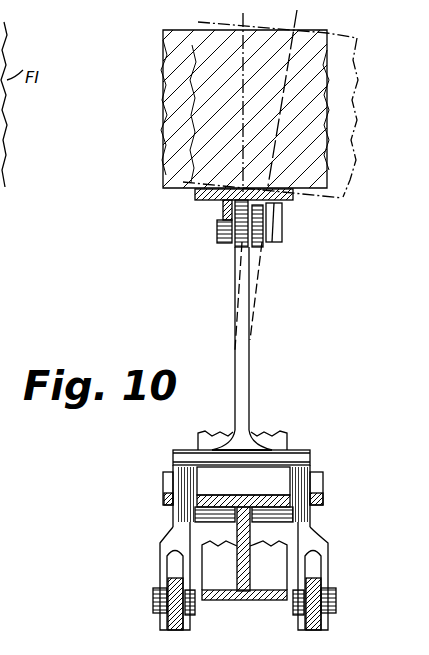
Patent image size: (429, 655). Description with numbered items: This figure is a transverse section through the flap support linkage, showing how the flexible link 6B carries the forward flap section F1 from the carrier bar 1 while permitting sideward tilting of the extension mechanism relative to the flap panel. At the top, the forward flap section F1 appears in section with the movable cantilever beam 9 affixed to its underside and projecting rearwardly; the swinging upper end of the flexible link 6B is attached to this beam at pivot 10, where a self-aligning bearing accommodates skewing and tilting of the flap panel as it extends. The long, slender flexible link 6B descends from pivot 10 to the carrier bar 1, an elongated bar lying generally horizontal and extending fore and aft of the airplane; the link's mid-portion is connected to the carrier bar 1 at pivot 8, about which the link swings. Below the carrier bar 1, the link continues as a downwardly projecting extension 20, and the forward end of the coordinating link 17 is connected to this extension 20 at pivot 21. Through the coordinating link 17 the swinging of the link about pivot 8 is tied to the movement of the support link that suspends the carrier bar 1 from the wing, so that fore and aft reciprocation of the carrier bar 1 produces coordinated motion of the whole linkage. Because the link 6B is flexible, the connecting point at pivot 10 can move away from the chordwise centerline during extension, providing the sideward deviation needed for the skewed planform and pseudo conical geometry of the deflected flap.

The forward flap section F1 is at (328, 98).
The movable cantilever beam 9 is at (222, 212).
The pivot 10 is at (218, 230).
The flexible link 6B is at (250, 376).
The carrier bar 1 is at (292, 438).
The pivot 8 is at (164, 480).
The downwardly projecting extension 20 is at (176, 520).
The coordinating link 17 is at (183, 628).
The pivot 21 is at (153, 598).